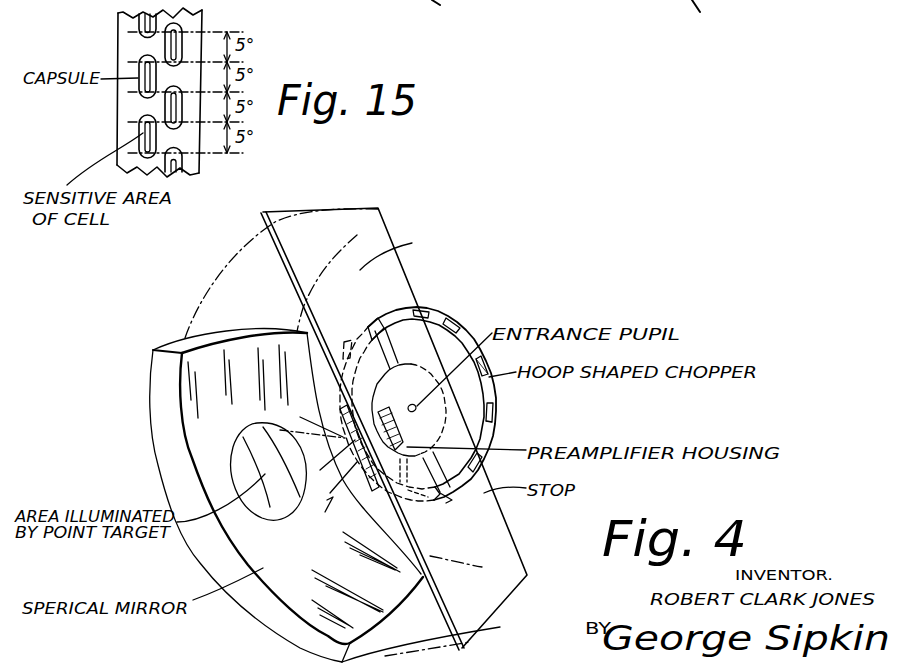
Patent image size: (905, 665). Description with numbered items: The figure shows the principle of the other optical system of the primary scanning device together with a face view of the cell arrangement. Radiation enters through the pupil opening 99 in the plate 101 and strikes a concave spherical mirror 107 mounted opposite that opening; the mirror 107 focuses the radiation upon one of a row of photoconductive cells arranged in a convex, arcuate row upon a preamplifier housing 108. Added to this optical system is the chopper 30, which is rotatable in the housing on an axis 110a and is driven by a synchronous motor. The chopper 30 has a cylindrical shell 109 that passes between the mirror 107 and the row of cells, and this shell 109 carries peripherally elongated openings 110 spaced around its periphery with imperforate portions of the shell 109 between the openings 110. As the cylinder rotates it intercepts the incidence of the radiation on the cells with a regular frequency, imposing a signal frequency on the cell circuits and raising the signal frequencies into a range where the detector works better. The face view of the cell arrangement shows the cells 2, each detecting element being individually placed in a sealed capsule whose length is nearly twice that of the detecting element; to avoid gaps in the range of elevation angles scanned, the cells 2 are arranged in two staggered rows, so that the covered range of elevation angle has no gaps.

In FIG. 15, the cells 2 is at (131, 61).
In FIG. 4, the plate 101 is at (395, 267).
In FIG. 4, the pupil opening 99 is at (390, 372).
In FIG. 4, the cylindrical shell 109 is at (432, 377).
In FIG. 4, the axis 110a is at (484, 354).
In FIG. 4, the chopper 30 is at (498, 397).
In FIG. 4, the preamplifier housing 108 is at (401, 429).
In FIG. 4, the openings 110 is at (497, 430).
In FIG. 4, the concave spherical mirror 107 is at (207, 429).